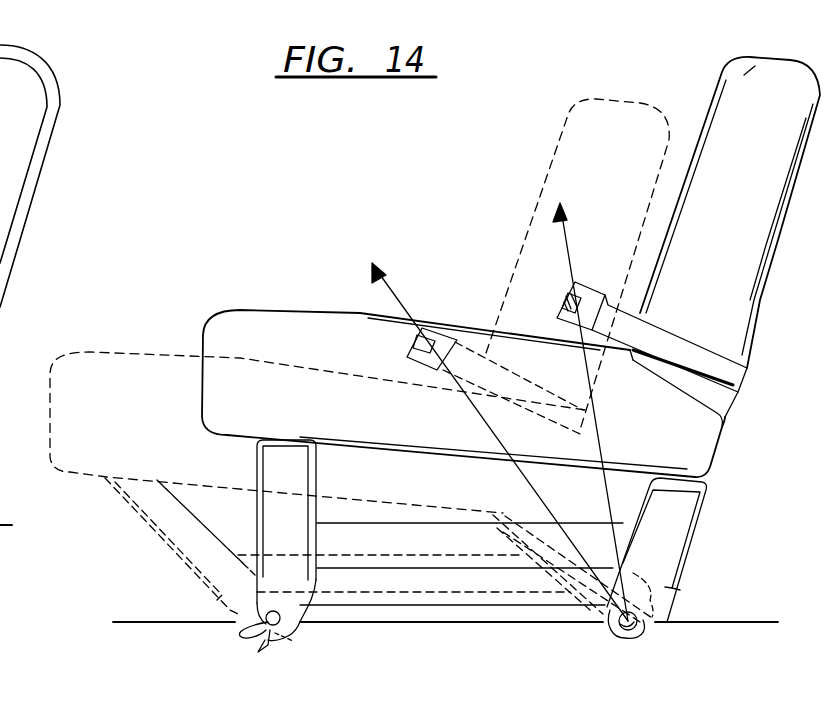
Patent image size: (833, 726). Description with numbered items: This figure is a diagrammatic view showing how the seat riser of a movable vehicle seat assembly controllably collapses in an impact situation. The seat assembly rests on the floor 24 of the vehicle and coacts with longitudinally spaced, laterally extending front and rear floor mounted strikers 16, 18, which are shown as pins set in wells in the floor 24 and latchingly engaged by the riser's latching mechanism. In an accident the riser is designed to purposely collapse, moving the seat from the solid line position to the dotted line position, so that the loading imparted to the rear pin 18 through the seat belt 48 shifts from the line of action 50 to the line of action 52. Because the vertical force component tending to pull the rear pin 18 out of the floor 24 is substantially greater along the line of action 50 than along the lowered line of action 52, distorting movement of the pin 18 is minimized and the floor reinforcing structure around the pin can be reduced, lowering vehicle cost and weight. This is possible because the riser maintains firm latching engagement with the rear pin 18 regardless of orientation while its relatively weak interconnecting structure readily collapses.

The front floor mounted striker 16 is at (252, 613).
The rear floor mounted striker 18 is at (636, 633).
The floor 24 is at (707, 620).
The seat belt 48 is at (598, 295).
The line of action 50 is at (566, 258).
The line of action 52 is at (421, 325).